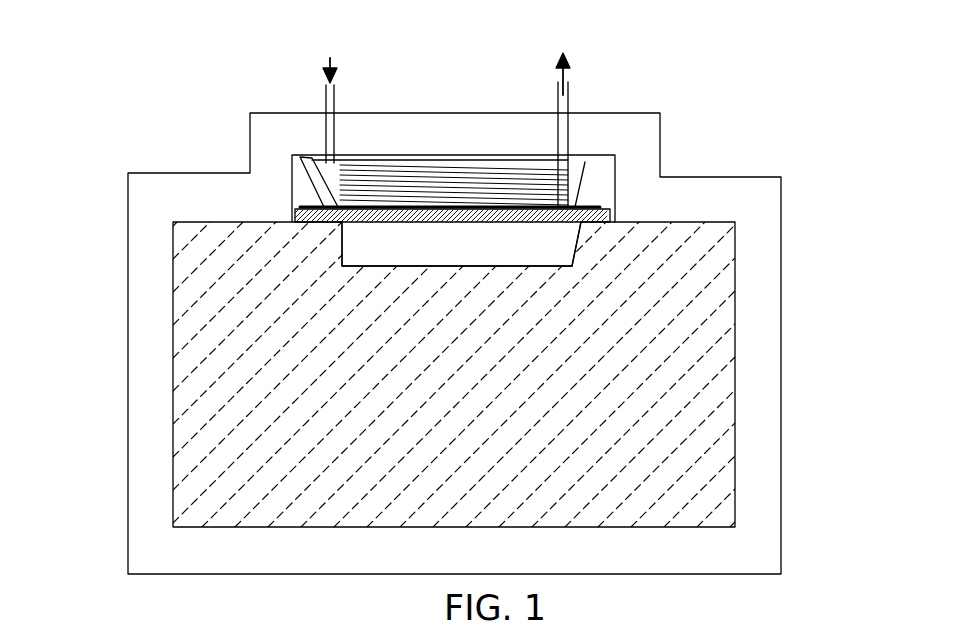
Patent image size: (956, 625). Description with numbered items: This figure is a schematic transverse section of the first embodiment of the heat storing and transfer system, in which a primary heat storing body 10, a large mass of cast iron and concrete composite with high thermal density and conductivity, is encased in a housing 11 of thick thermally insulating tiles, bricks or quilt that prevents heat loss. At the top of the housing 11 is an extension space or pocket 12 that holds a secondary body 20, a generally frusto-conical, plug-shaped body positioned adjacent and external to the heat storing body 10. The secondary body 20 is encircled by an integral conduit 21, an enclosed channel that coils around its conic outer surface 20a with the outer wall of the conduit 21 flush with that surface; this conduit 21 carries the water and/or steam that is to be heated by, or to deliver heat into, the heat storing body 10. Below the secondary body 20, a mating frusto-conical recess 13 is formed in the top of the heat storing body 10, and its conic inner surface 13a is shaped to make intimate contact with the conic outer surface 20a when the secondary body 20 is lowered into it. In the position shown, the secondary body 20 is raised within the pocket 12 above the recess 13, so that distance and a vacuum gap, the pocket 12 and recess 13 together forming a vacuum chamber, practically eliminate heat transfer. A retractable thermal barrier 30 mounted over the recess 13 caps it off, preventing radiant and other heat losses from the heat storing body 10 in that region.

The primary heat storing body 10 is at (205, 468).
The housing 11 is at (146, 380).
The pocket 12 is at (300, 182).
The recess 13 is at (348, 249).
The conic inner surface of the recess 13a is at (560, 245).
The secondary body 20 is at (500, 184).
The conic outer surface 20a is at (583, 197).
The integral conduit 21 is at (415, 155).
The retractable thermal barrier 30 is at (316, 206).